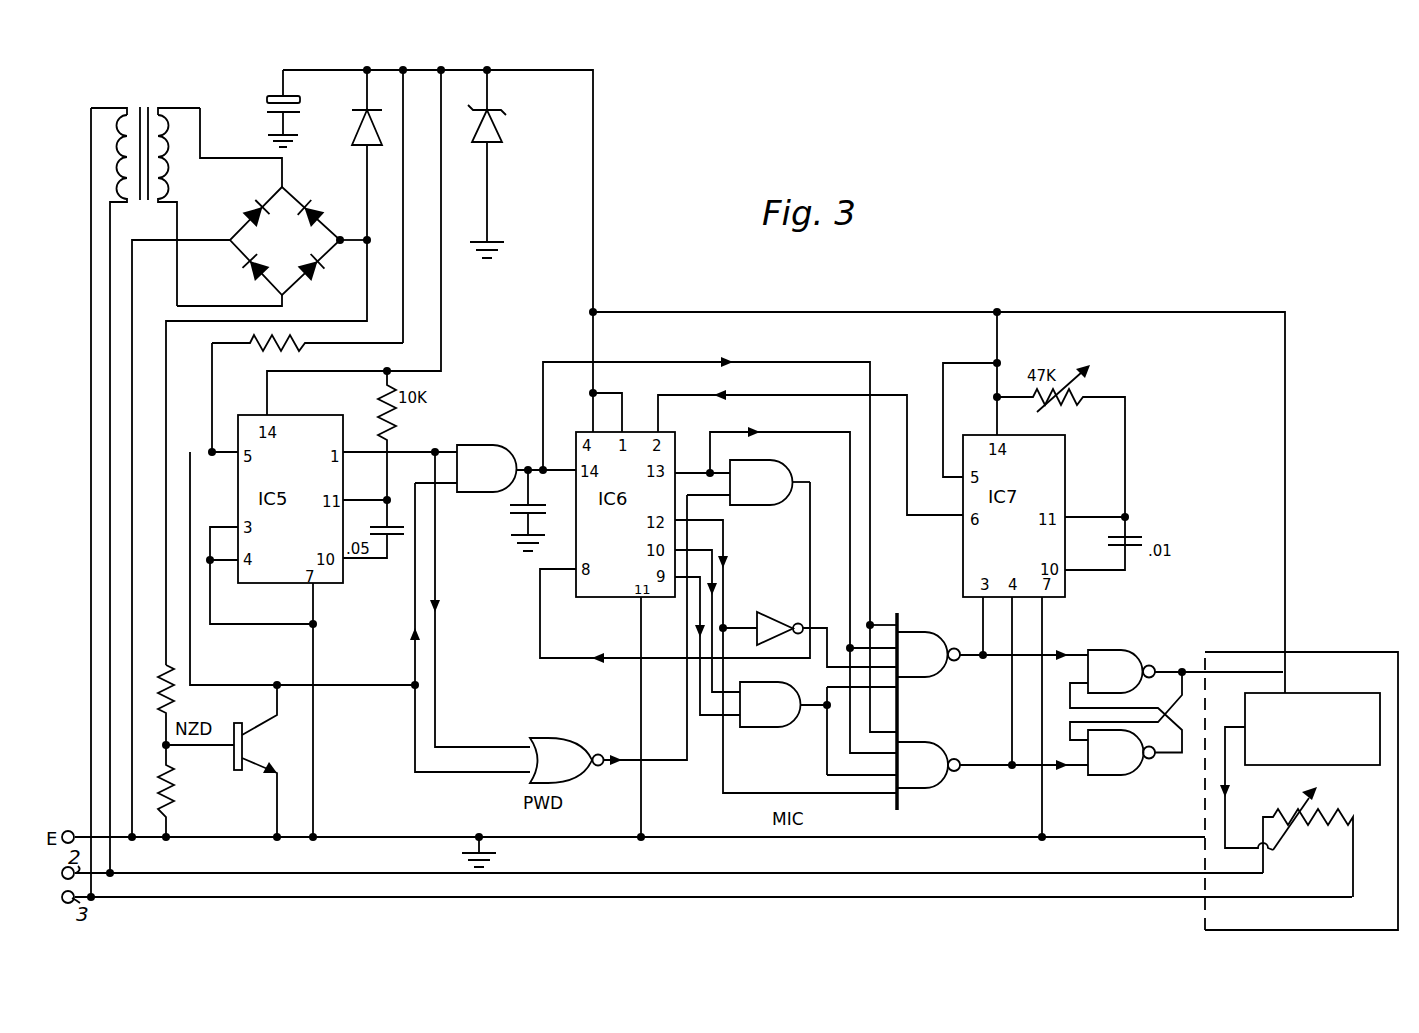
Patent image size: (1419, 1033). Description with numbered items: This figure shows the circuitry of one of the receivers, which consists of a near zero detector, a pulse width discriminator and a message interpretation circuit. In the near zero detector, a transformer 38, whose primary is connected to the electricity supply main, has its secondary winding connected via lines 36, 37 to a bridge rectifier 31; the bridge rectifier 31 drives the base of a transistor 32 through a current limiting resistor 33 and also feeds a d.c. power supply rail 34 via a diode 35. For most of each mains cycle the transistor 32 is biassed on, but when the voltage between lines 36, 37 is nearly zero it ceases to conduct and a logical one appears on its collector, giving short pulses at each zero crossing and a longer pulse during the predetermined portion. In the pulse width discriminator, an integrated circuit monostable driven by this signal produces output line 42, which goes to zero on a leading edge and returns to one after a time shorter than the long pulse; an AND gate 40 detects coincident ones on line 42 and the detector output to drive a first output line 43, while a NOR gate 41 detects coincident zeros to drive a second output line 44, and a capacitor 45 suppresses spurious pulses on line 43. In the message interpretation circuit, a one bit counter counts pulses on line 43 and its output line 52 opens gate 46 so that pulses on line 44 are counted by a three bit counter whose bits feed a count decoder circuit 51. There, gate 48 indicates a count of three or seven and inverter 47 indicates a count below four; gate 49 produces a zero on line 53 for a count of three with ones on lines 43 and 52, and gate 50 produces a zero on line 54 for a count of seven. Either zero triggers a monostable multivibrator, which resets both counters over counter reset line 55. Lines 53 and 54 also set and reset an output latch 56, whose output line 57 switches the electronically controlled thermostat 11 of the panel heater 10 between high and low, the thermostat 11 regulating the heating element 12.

The panel heater 10 is at (1308, 652).
The electronically controlled thermostat 11 is at (1313, 693).
The heating element 12 is at (1285, 808).
The bridge rectifier 31 is at (294, 250).
The transistor 32 is at (250, 745).
The current limiting resistor 33 is at (180, 692).
The d.c. power supply rail 34 is at (456, 68).
The diode 35 is at (350, 135).
The line 36 is at (220, 158).
The line 37 is at (232, 306).
The transformer 38 is at (133, 110).
The AND gate 40 is at (480, 462).
The NOR gate 41 is at (553, 748).
The output line 42 is at (400, 456).
The first PWD output line 43 is at (517, 472).
The second PWD output line 44 is at (662, 762).
The capacitor 45 is at (505, 510).
The gate 46 is at (775, 468).
The inverter 47 is at (773, 610).
The gate 48 is at (770, 718).
The gate 49 is at (925, 643).
The gate 50 is at (920, 745).
The count decoder circuit 51 is at (912, 596).
The line 52 is at (692, 470).
The line 53 is at (975, 660).
The line 54 is at (990, 768).
The counter reset line 55 is at (897, 397).
The output latch 56 is at (1130, 628).
The output line 57 is at (1193, 668).